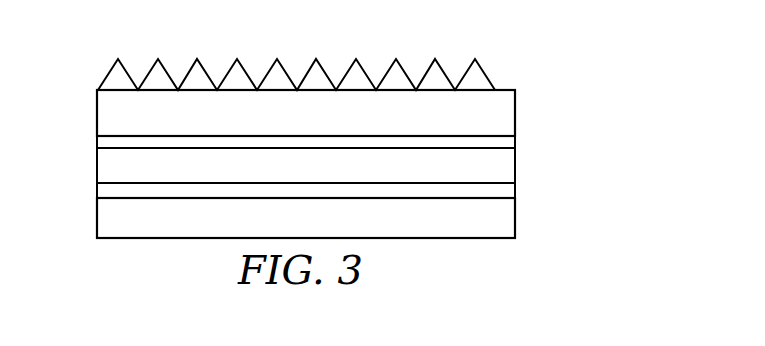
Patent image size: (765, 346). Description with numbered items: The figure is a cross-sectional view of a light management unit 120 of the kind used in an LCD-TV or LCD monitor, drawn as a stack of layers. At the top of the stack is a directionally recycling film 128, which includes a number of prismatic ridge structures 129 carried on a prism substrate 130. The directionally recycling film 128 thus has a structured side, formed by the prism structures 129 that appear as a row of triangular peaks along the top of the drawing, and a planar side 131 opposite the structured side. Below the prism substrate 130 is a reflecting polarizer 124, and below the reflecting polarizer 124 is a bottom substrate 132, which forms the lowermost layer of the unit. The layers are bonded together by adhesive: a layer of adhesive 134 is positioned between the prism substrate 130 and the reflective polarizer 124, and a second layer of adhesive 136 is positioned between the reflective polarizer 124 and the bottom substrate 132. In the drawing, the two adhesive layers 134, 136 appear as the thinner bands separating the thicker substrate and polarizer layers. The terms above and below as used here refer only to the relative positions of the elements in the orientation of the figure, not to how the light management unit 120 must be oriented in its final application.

The light management unit 120 is at (86, 35).
The directionally recycling film 128 is at (85, 60).
The prismatic ridge structures 129 is at (484, 72).
The prism substrate 130 is at (515, 112).
The planar side 131 is at (116, 137).
The layer of adhesive 134 is at (515, 140).
The reflecting polarizer 124 is at (515, 165).
The second layer of adhesive 136 is at (515, 190).
The bottom substrate 132 is at (515, 222).